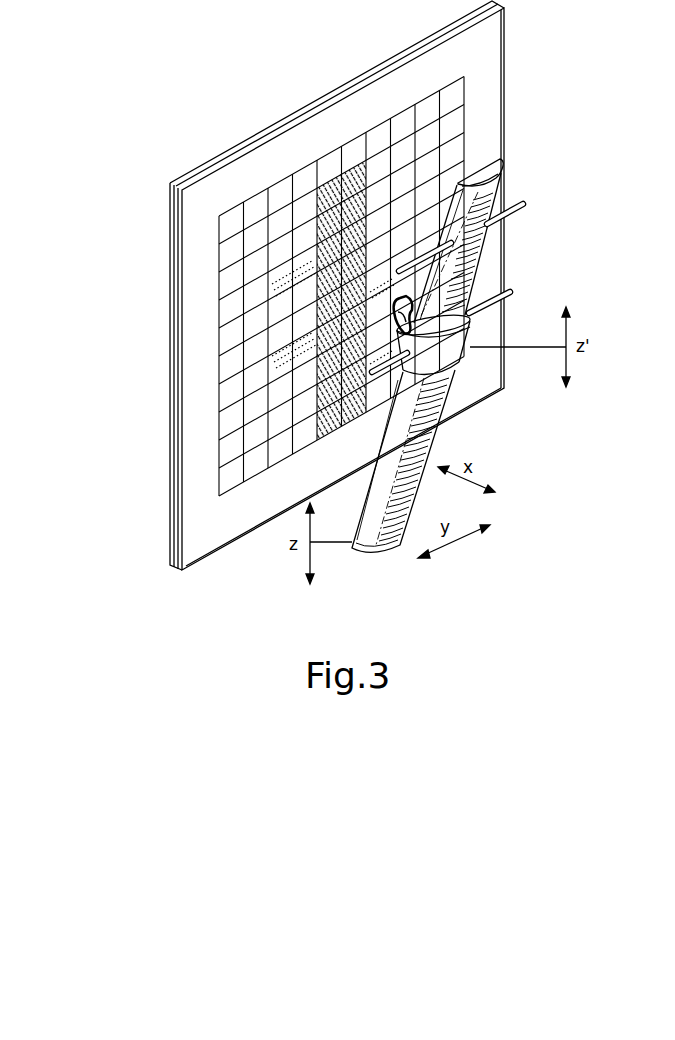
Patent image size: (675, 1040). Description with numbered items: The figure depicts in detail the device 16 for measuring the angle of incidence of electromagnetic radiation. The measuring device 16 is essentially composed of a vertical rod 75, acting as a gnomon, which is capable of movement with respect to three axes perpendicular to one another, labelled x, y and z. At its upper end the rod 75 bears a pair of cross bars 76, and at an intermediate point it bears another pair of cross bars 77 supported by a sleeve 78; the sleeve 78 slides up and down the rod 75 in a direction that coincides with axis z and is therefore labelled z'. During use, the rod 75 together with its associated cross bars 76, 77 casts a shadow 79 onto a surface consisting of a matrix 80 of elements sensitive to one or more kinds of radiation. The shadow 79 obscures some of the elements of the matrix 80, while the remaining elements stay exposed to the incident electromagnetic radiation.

The device for measuring the angle of incidence 16 is at (152, 370).
The vertical rod 75 is at (498, 244).
The pair of cross bars 76 is at (448, 243).
The pair of cross bars 77 is at (511, 292).
The sleeve 78 is at (453, 374).
The shadow 79 is at (396, 304).
The matrix 80 is at (222, 216).